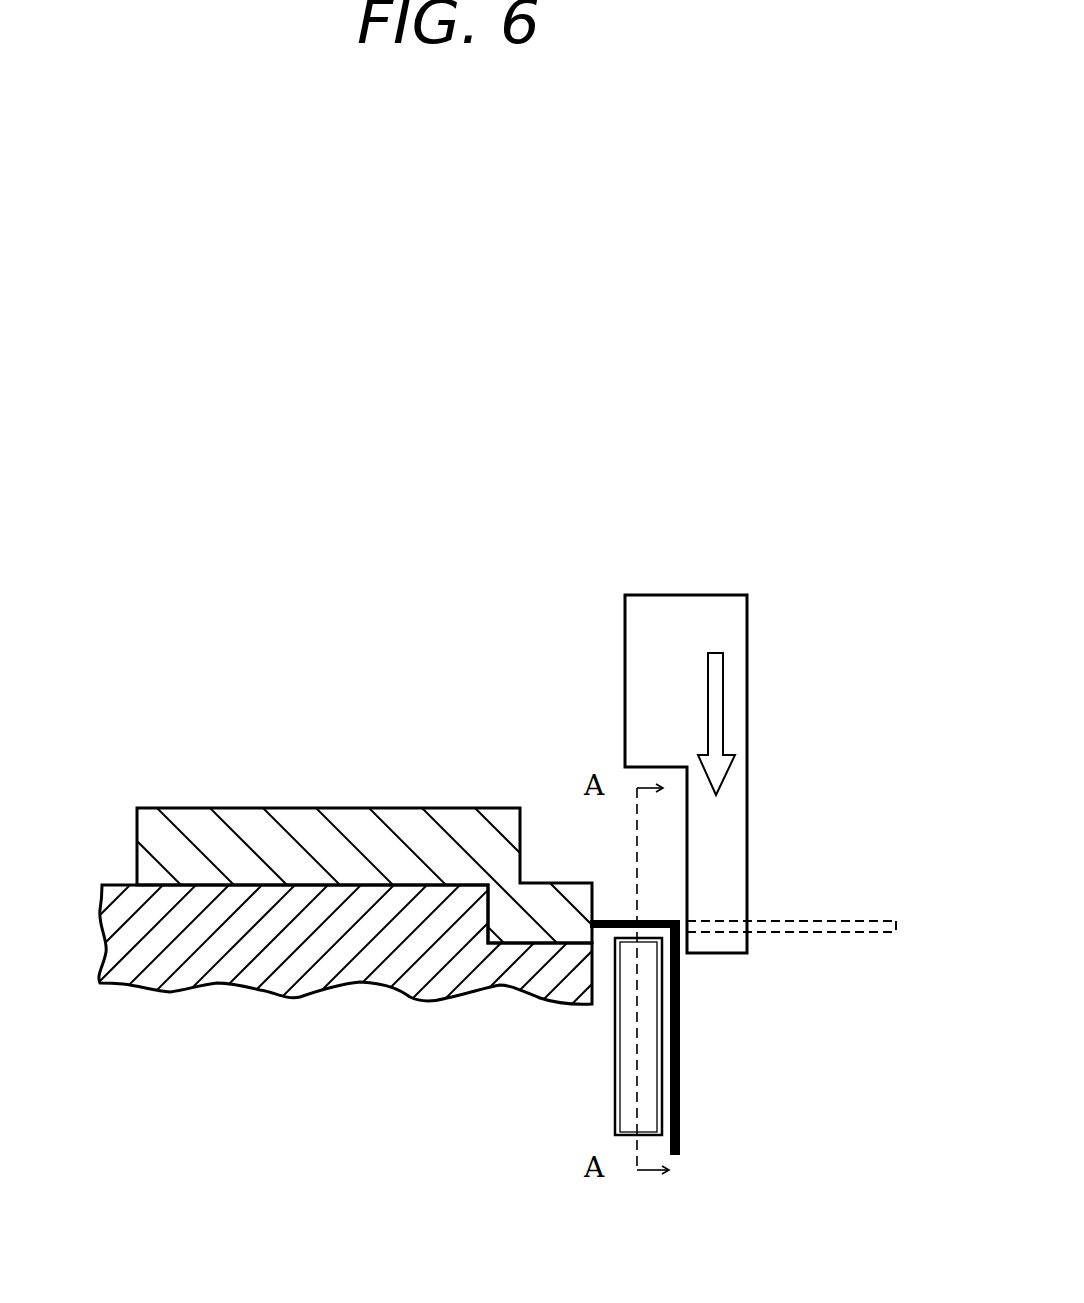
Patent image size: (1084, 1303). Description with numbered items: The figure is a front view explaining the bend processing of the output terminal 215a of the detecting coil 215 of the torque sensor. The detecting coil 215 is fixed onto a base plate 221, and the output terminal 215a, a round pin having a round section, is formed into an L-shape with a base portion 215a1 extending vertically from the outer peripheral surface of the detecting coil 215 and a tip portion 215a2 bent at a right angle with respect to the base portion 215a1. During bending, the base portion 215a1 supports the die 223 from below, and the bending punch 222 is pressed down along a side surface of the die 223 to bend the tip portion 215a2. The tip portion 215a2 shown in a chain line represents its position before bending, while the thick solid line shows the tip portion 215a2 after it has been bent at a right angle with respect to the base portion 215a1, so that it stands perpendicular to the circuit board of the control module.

The detecting coil 215 is at (297, 825).
The base plate 221 is at (304, 968).
The bending punch 222 is at (733, 622).
The die 223 is at (633, 1082).
The output terminal 215a is at (688, 1158).
The base portion 215a1 is at (654, 920).
The tip portion 215a2 is at (808, 934).